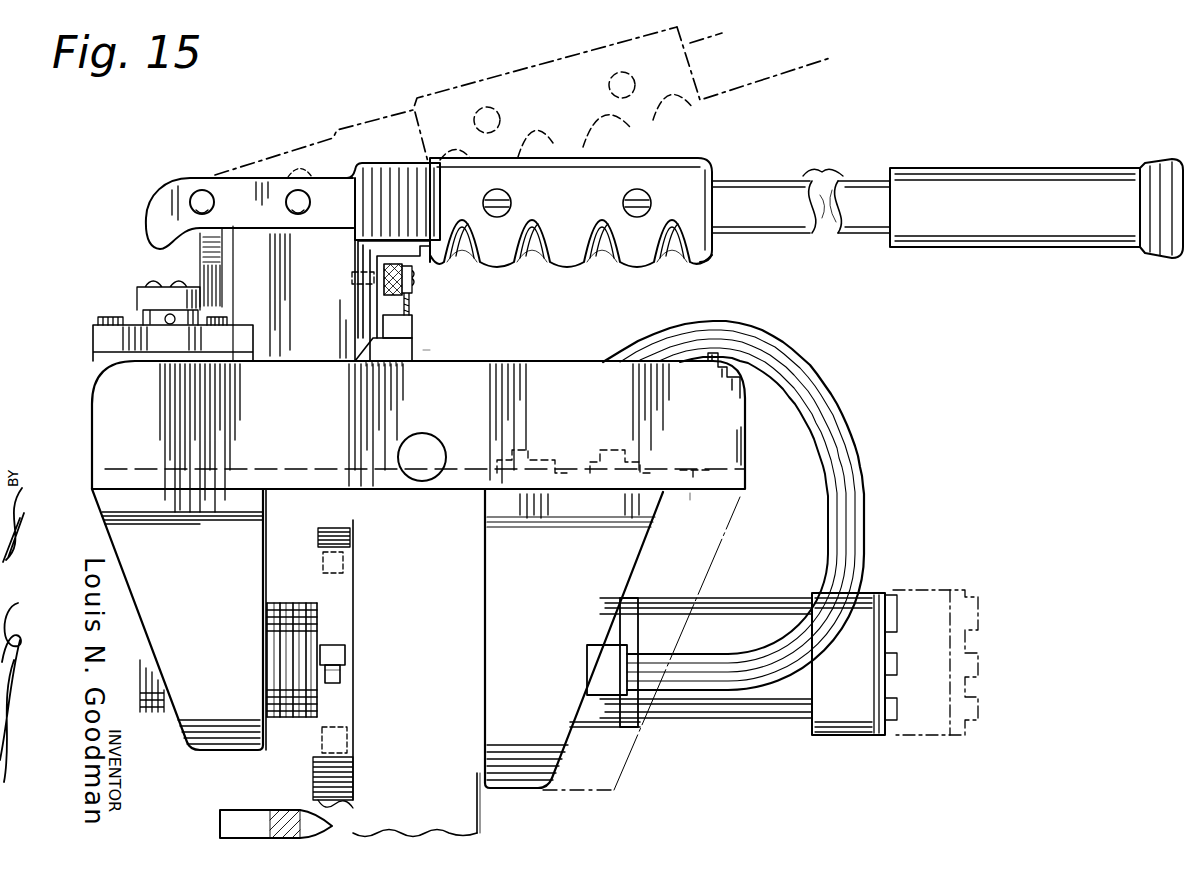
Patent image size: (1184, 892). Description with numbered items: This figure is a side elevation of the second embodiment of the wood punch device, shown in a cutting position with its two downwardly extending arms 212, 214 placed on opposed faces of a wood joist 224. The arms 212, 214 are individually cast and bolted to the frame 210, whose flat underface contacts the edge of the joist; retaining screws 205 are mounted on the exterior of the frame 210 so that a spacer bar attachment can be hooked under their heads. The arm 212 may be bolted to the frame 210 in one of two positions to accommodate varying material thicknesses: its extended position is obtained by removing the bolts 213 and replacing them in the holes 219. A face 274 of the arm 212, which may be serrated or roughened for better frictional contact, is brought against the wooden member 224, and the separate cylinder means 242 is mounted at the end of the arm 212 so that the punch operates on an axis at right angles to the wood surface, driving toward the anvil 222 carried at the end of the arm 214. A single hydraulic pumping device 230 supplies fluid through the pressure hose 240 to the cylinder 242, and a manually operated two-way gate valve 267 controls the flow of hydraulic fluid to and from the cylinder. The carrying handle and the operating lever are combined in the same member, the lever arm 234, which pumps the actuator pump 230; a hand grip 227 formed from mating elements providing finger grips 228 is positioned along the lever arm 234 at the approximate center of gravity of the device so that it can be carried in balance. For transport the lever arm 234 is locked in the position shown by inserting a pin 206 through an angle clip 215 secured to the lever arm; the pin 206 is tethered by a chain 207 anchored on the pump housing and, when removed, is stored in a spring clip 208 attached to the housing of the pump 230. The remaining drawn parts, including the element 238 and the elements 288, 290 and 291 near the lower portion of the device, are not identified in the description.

The retaining screws 205 is at (431, 447).
The pin 206 is at (415, 292).
The chain 207 is at (411, 306).
The spring clip 208 is at (403, 325).
The frame 210 is at (134, 420).
The arm 212 is at (583, 604).
The bolts 213 is at (614, 442).
The arm 214 is at (212, 604).
The angle clip 215 is at (412, 258).
The holes 219 is at (694, 495).
The anvil 222 is at (318, 537).
The wood joist 224 is at (443, 762).
The hand grip 227 is at (602, 204).
The finger grips 228 is at (655, 262).
The hydraulic pumping device 230 is at (423, 350).
The lever arm 234 is at (763, 253).
The curved tube 238 is at (852, 505).
The pressure hose 240 is at (867, 588).
The separate cylinder means 242 is at (735, 708).
The two-way gate valve 267 is at (121, 359).
The face 274 is at (478, 777).
The foot block 288 is at (241, 812).
The latch 290 is at (333, 572).
The latch pin 291 is at (340, 675).